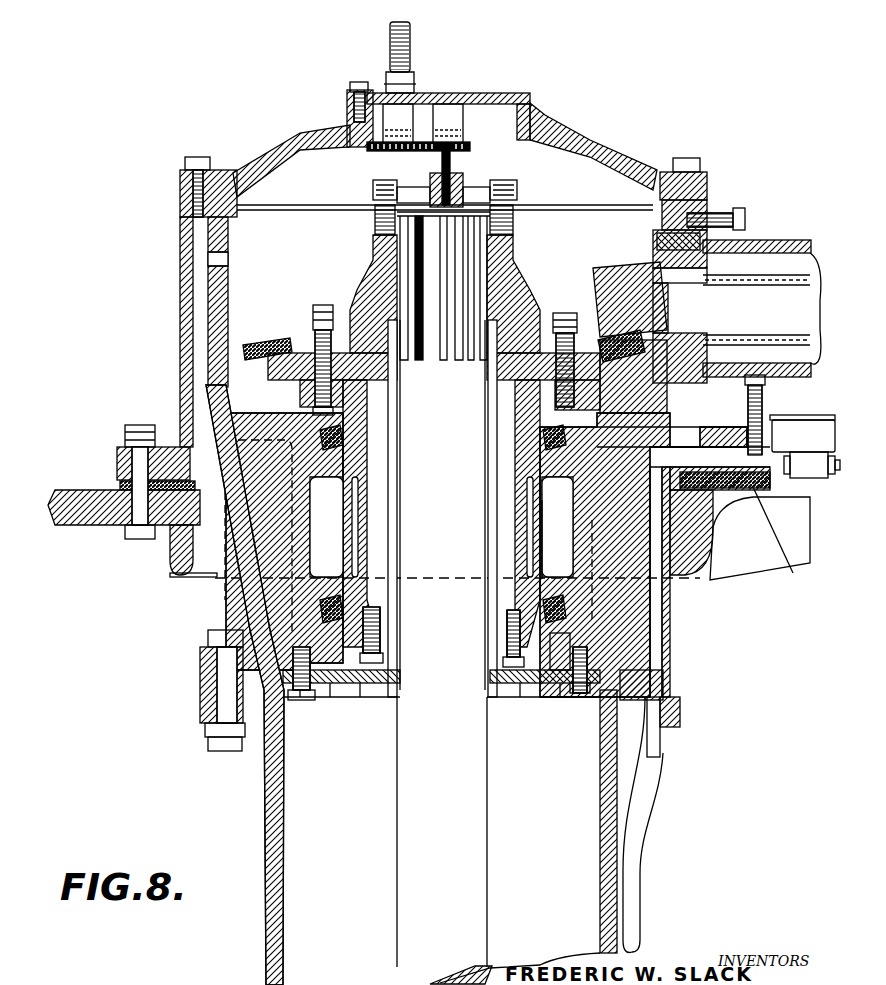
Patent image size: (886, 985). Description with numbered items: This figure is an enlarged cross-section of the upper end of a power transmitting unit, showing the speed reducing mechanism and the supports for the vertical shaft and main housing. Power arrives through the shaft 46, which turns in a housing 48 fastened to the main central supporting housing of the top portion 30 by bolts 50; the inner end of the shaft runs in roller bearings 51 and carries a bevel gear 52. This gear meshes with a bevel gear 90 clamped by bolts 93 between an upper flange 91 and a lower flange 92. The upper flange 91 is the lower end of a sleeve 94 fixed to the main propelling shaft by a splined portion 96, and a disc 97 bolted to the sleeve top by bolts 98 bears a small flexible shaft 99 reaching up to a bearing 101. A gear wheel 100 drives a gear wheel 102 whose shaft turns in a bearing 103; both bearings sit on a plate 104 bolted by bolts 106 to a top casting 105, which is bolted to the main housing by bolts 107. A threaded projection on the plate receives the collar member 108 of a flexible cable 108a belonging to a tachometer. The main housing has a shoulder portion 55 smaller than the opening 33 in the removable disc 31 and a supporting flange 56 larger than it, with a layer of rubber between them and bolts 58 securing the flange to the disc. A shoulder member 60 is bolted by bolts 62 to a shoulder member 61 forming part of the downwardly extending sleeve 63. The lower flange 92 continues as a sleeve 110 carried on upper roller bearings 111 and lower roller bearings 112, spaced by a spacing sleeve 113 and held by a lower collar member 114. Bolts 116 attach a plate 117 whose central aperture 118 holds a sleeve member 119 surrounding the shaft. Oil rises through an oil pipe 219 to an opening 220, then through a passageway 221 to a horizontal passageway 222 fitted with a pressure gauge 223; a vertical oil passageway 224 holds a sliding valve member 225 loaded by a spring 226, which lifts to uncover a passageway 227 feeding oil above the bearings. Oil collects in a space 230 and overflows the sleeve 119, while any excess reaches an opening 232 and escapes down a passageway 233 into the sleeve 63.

The flexible cable 108a is at (410, 42).
The collar member 108 is at (404, 88).
The bearing 103 is at (404, 115).
The bearing 101 is at (462, 105).
The plate 104 is at (524, 100).
The bolts 106 is at (352, 95).
The top casting 105 is at (290, 145).
The gear wheel 100 is at (460, 140).
The top portion 30 is at (602, 148).
The bolts 107 is at (183, 192).
The gear wheel 102 is at (370, 150).
The shaft 99 is at (452, 168).
The disc 97 is at (495, 186).
The bolts 98 is at (518, 192).
The bolts 50 is at (740, 214).
The housing 48 is at (748, 246).
The shaft 46 is at (795, 318).
The roller bearings 51 is at (660, 250).
The splined portion 96 is at (418, 245).
The sleeve 94 is at (502, 264).
The bolts 93 is at (322, 315).
The bevel gear 52 is at (597, 275).
The upper flange 91 is at (556, 320).
The opening 232 is at (230, 260).
The passageway 233 is at (190, 322).
The bevel gear 90 is at (268, 358).
The sleeve member 119 is at (397, 398).
The lower flange 92 is at (588, 385).
The upper roller bearings 111 is at (667, 437).
The bolts 58 is at (150, 425).
The spring 226 is at (768, 398).
The sliding valve member 225 is at (776, 418).
The pressure gauge 223 is at (832, 445).
The supporting flange 56 is at (117, 462).
The passageway 227 is at (662, 456).
The passageway 222 is at (662, 476).
The oil passageway 224 is at (776, 478).
The sleeve 110 is at (535, 505).
The space 230 is at (373, 483).
The spacing sleeve 113 is at (535, 540).
The removable disc 31 is at (795, 507).
The opening 33 is at (684, 555).
The shoulder portion 55 is at (212, 580).
The passageway 221 is at (664, 628).
The shoulder member 60 is at (200, 665).
The bolts 62 is at (218, 680).
The shoulder member 61 is at (202, 715).
The bolts 116 is at (312, 690).
The plate 117 is at (363, 688).
The central aperture 118 is at (373, 690).
The lower roller bearings 112 is at (547, 660).
The lower collar member 114 is at (533, 690).
The opening 220 is at (668, 697).
The sleeve 63 is at (273, 810).
The oil pipe 219 is at (625, 892).